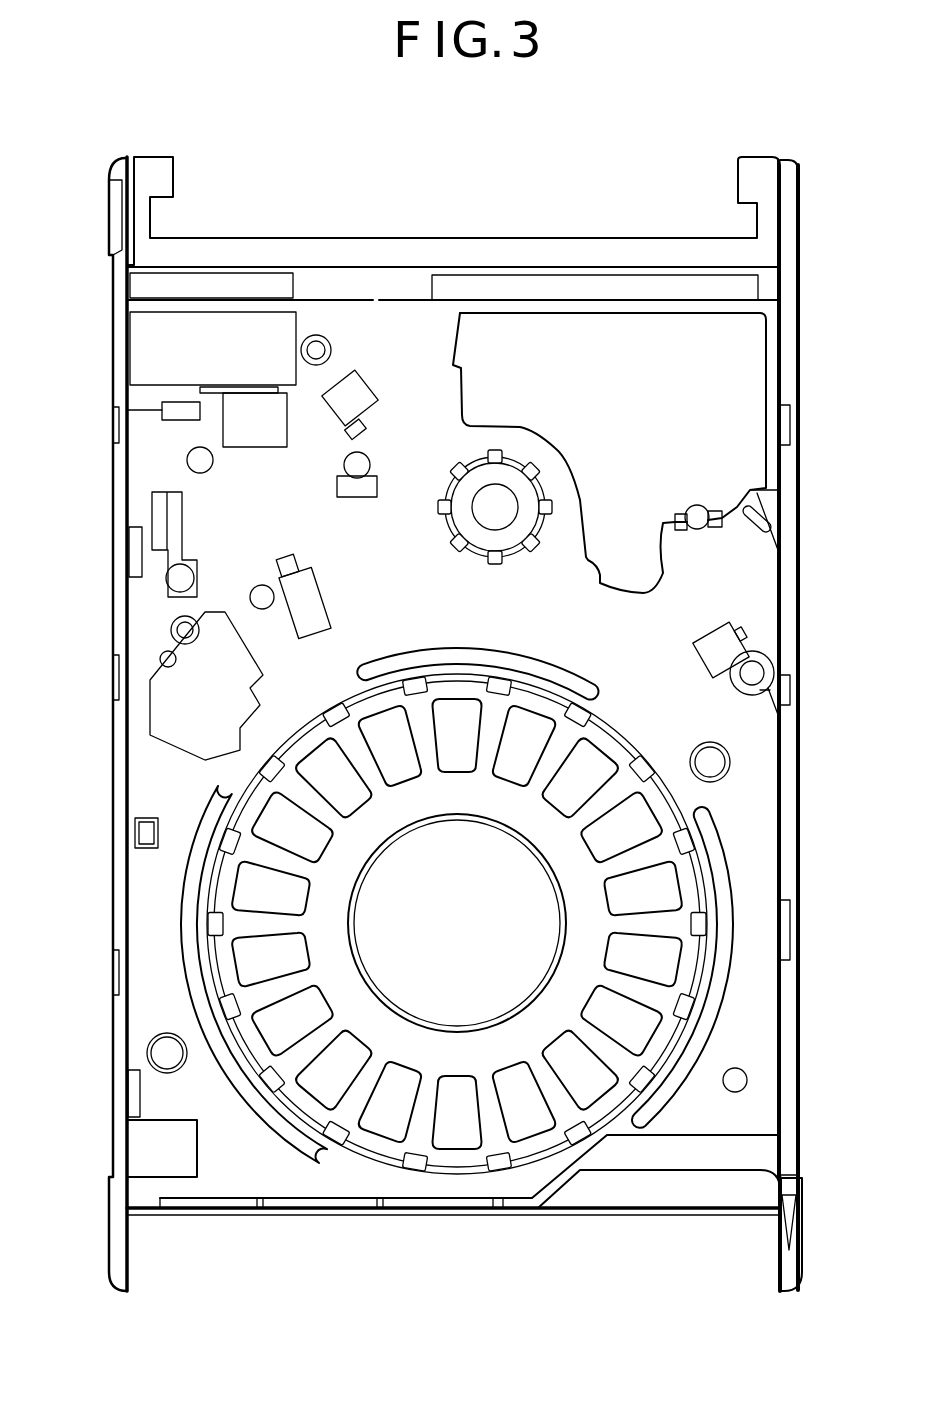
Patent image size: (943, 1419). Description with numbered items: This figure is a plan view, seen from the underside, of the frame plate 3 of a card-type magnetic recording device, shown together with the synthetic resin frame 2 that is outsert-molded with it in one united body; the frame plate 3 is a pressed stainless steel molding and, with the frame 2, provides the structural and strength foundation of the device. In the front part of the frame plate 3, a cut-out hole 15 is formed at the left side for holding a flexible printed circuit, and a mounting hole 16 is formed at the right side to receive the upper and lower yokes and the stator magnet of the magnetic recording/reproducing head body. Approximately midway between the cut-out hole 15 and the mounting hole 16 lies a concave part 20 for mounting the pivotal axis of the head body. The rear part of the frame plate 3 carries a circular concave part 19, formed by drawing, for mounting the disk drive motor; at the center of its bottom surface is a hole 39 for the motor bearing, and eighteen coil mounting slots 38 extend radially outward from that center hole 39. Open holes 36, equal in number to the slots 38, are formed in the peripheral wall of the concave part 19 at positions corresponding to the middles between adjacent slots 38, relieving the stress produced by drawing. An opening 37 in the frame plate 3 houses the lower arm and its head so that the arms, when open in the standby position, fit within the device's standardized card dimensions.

The synthetic resin frame 2 is at (793, 537).
The frame plate 3 is at (750, 597).
The cut-out hole 15 is at (228, 318).
The mounting hole 16 is at (737, 365).
The concave part 19 is at (622, 790).
The concave part 20 is at (485, 472).
The open holes 36 is at (217, 823).
The opening 37 is at (148, 722).
The coil mounting slots 38 is at (245, 887).
The hole 39 is at (440, 1003).